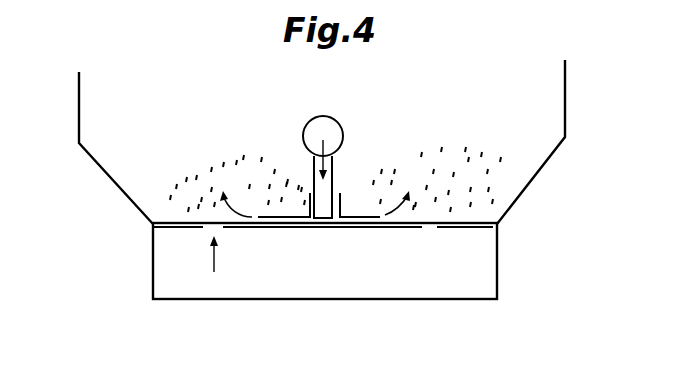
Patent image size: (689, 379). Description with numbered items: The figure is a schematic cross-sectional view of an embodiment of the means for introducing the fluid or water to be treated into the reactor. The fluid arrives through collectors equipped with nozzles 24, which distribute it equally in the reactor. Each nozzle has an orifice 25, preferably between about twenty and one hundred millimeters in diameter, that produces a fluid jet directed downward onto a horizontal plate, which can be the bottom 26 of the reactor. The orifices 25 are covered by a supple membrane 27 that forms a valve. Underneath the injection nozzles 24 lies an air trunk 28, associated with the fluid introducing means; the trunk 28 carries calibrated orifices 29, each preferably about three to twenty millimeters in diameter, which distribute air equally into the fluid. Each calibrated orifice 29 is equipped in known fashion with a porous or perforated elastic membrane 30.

The nozzle 24 is at (343, 130).
The orifice 25 is at (327, 228).
The bottom of the reactor 26 is at (370, 228).
The supple membrane 27 is at (346, 215).
The air trunk 28 is at (247, 285).
The calibrated orifice 29 is at (437, 229).
The porous or perforated elastic membrane 30 is at (212, 227).